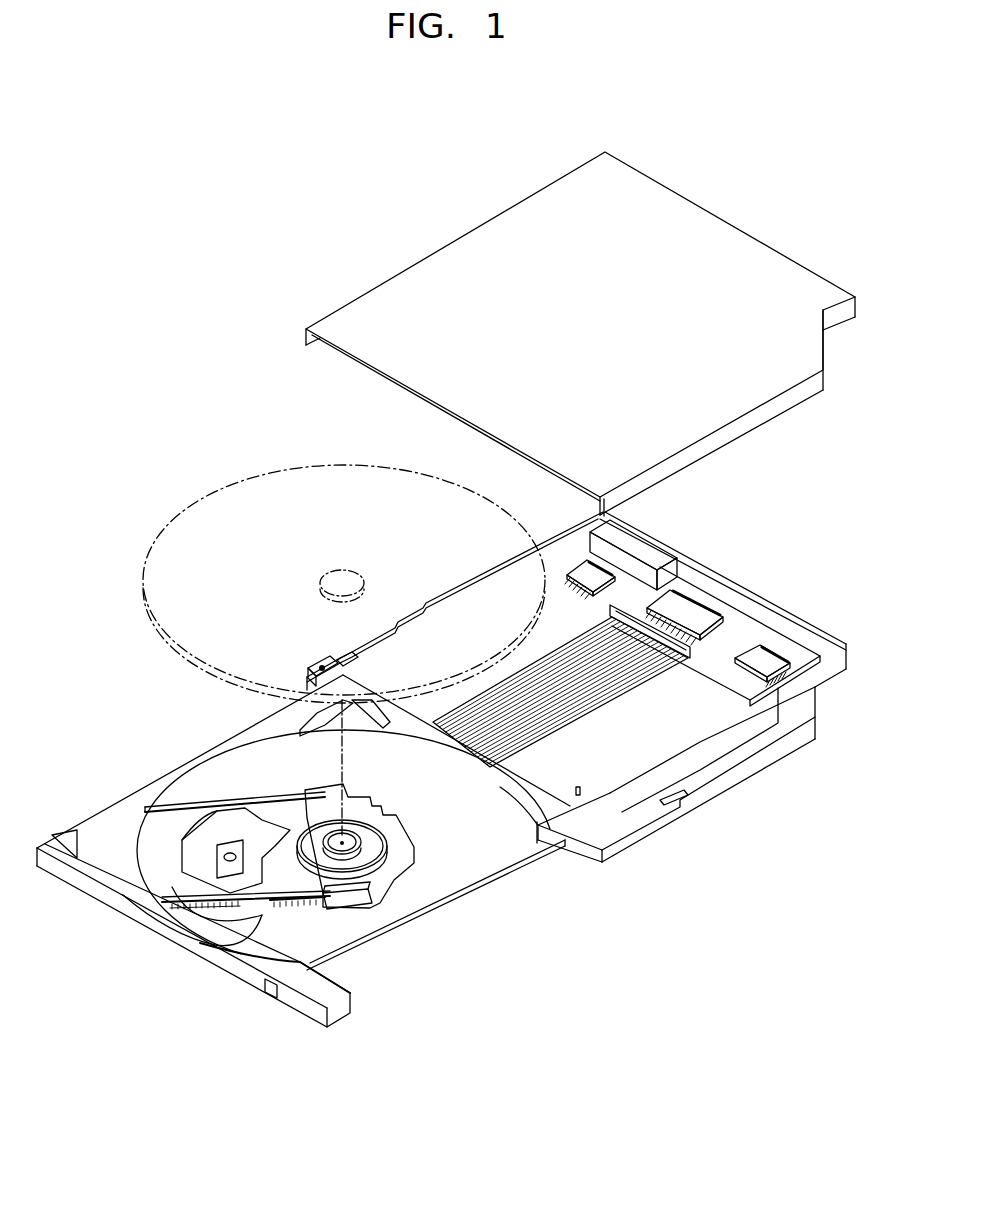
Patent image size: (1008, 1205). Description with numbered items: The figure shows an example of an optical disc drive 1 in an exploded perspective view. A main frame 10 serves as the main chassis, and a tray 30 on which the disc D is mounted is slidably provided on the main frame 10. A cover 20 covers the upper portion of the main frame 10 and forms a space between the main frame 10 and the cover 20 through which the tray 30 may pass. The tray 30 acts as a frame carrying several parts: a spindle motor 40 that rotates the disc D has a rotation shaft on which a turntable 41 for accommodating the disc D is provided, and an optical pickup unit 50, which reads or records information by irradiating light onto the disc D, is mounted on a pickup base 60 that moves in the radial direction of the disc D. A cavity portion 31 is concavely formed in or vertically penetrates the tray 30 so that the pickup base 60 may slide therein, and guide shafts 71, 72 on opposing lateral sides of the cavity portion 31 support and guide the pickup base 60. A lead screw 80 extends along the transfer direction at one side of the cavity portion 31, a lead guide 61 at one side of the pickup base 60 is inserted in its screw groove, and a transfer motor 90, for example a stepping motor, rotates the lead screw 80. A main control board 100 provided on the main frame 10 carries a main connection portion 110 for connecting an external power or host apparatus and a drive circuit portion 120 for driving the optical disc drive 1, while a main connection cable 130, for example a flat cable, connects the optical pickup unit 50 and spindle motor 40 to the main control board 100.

The optical disc drive 1 is at (188, 296).
The main frame 10 is at (732, 803).
The cover 20 is at (410, 282).
The tray 30 is at (240, 973).
The cavity portion 31 is at (281, 838).
The spindle motor 40 is at (388, 882).
The turntable 41 is at (355, 836).
The optical pickup unit 50 is at (230, 847).
The pickup base 60 is at (190, 848).
The lead guide 61 is at (230, 921).
The guide shaft 71 is at (163, 899).
The guide shaft 72 is at (195, 806).
The lead screw 80 is at (310, 904).
The transfer motor 90 is at (357, 904).
The main control board 100 is at (742, 617).
The main connection portion 110 is at (648, 547).
The drive circuit portion 120 is at (768, 655).
The main connection cable 130 is at (643, 682).
The disc D is at (195, 520).